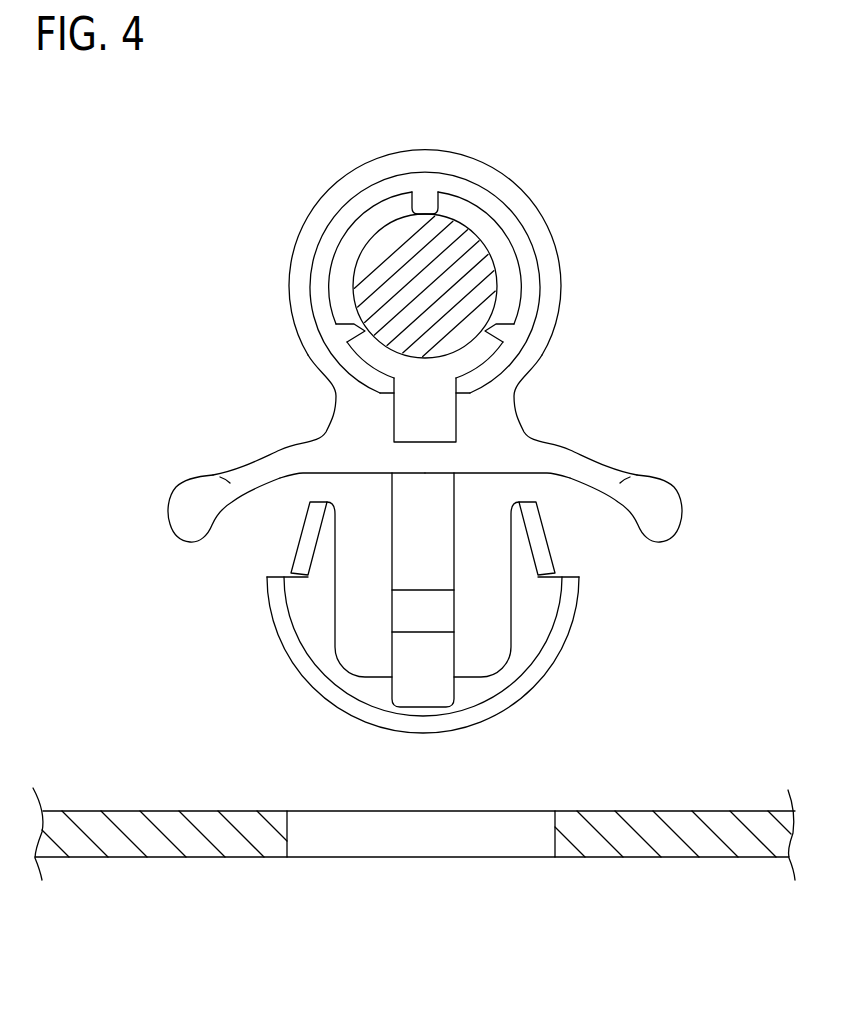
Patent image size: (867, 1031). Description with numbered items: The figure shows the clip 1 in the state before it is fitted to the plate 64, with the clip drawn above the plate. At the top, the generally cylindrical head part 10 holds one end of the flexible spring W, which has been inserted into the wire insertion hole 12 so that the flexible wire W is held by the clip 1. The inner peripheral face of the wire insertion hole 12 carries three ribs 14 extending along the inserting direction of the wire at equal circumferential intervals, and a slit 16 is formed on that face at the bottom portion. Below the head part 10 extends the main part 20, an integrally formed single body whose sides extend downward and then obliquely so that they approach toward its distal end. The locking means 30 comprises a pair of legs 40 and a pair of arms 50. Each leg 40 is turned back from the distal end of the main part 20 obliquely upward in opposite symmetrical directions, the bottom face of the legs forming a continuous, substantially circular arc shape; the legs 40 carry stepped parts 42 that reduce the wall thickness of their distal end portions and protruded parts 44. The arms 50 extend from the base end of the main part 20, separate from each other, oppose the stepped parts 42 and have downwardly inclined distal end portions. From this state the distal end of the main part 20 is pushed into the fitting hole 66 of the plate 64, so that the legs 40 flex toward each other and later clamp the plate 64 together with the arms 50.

The clip 1 is at (250, 135).
The head part 10 is at (520, 202).
The wire insertion hole 12 is at (507, 270).
The ribs 14 is at (432, 202).
The slit 16 is at (420, 414).
The flexible spring W is at (385, 245).
The main part 20 is at (435, 505).
The locking means 30 is at (122, 563).
The legs 40 is at (335, 668).
The stepped parts 42 is at (273, 571).
The protruded parts 44 is at (273, 583).
The arms 50 is at (167, 490).
The plate 64 is at (680, 823).
The fitting hole 66 is at (515, 838).